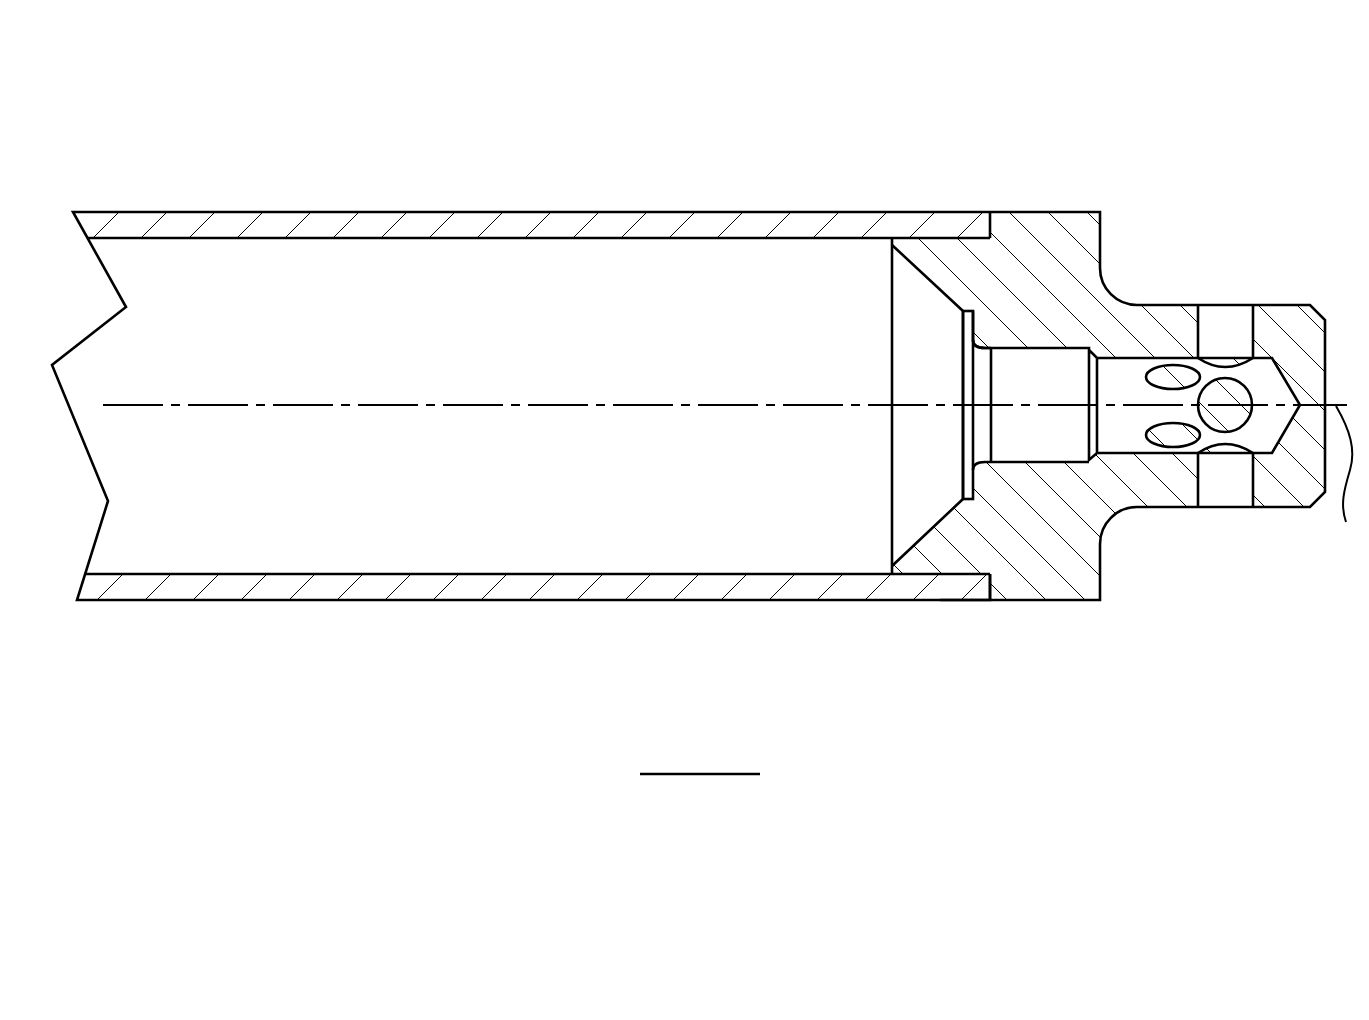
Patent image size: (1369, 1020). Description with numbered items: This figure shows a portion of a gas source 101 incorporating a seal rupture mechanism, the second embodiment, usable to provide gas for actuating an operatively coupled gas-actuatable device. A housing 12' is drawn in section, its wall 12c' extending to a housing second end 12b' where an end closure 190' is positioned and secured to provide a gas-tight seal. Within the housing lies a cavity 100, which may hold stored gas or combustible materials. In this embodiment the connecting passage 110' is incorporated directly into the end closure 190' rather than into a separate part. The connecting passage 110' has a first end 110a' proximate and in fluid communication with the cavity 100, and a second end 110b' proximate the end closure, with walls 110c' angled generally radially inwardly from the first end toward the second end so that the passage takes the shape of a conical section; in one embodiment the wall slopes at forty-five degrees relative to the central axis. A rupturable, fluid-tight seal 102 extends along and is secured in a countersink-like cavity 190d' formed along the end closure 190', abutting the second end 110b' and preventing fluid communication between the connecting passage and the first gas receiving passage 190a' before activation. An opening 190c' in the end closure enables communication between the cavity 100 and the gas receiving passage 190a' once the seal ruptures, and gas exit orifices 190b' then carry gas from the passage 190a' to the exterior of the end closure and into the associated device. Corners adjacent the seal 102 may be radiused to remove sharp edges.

The cavity 100 is at (168, 268).
The gas source 101 is at (366, 709).
The tube 12' is at (526, 454).
The tube end portion 12b' is at (970, 626).
The tube wall 12c' is at (542, 629).
The connecting passage 110' is at (957, 401).
The first end of connecting passage 110a' is at (803, 451).
The second end of connecting passage 110b' is at (1029, 495).
The connecting passage wall 110c' is at (931, 344).
The seal 102 is at (975, 427).
The end closure 190' is at (929, 387).
The first gas receiving passage 190a' is at (1161, 343).
The gas exit orifices 190b' is at (1260, 405).
The opening 190c' is at (1092, 276).
The cavity or countersink 190d' is at (1084, 252).